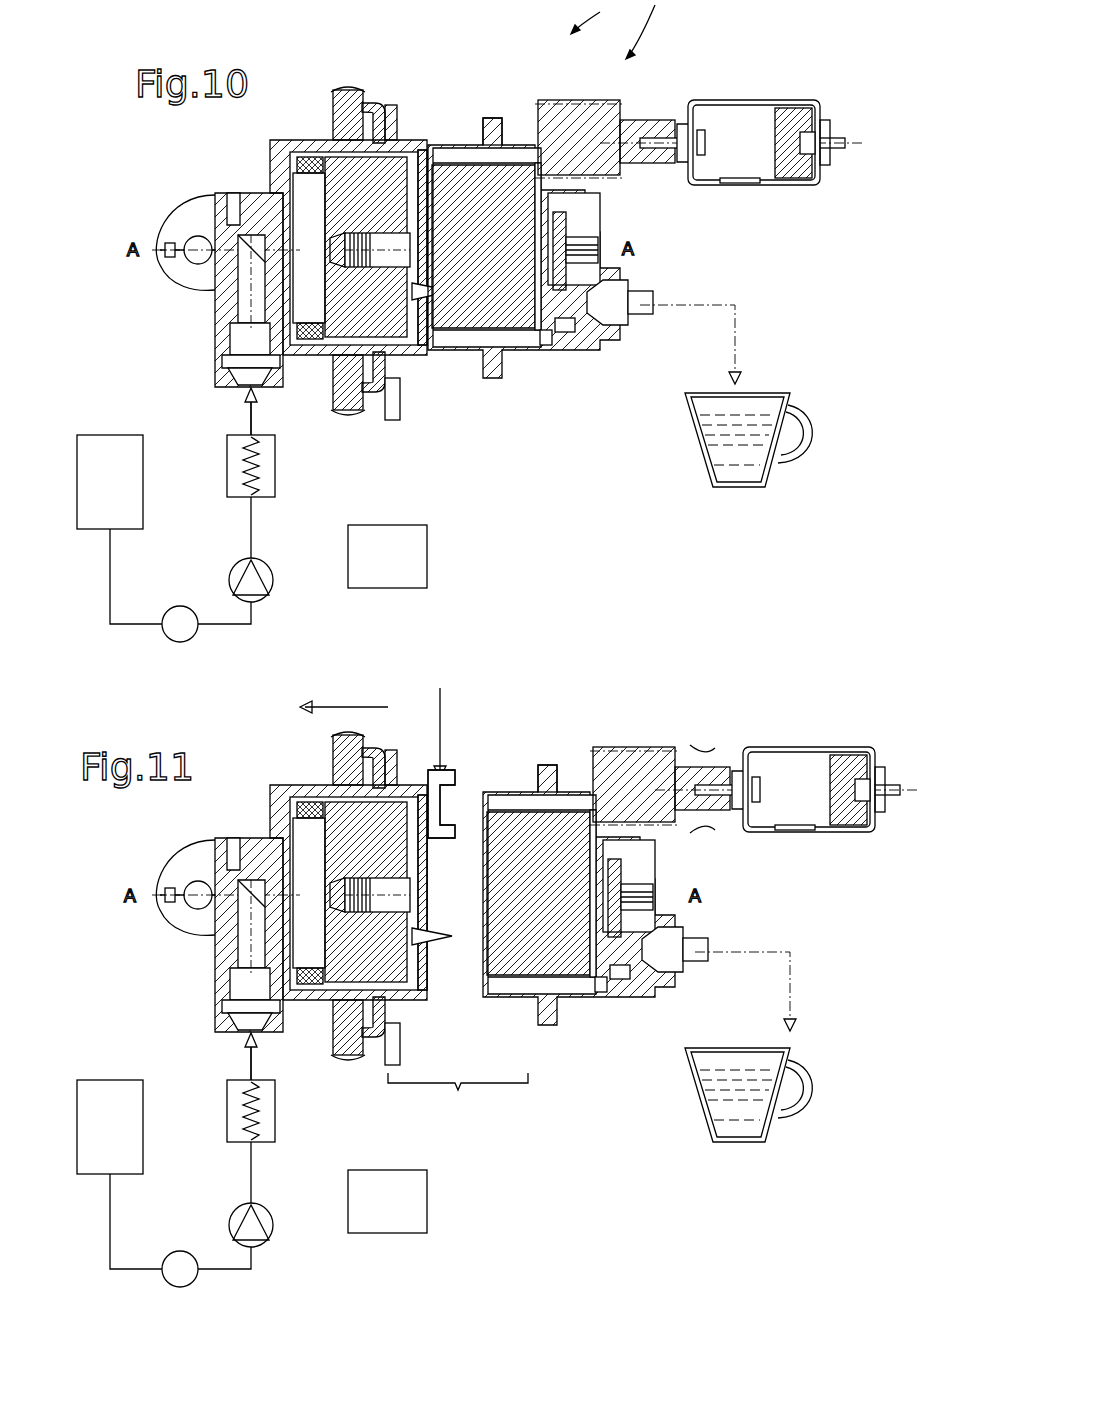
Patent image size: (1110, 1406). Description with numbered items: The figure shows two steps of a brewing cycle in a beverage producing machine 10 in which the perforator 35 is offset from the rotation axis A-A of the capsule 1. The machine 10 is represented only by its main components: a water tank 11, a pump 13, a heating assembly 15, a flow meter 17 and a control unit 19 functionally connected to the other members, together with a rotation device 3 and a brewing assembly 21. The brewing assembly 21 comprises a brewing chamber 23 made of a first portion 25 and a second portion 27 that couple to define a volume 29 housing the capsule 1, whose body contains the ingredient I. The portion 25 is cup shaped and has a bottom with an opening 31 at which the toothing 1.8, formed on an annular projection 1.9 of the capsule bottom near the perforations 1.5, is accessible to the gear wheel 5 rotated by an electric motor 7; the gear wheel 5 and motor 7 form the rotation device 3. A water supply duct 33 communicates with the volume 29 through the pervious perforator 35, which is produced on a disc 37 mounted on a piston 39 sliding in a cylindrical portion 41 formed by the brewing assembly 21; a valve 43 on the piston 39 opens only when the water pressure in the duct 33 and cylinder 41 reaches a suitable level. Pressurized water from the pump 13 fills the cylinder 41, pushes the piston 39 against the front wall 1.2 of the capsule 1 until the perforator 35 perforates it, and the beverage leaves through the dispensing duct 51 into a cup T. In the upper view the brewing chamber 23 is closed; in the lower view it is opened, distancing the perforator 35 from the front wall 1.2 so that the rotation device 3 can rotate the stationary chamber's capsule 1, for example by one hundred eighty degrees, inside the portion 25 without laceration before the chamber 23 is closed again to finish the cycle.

In FIG. 10, the capsule 1 is at (584, 237).
In FIG. 11, the capsule 1 is at (621, 899).
In FIG. 11, the front wall 1.2 is at (454, 827).
In FIG. 10, the perforations 1.5 is at (575, 235).
In FIG. 11, the perforations 1.5 is at (647, 893).
In FIG. 10, the toothing 1.8 is at (560, 350).
In FIG. 11, the toothing 1.8 is at (603, 1017).
In FIG. 10, the annular projection 1.9 is at (570, 345).
In FIG. 11, the annular projection 1.9 is at (638, 1004).
In FIG. 10, the rotation device 3 is at (700, 139).
In FIG. 11, the rotation device 3 is at (755, 786).
In FIG. 10, the gear wheel 5 is at (580, 118).
In FIG. 11, the gear wheel 5 is at (755, 752).
In FIG. 10, the electric motor 7 is at (772, 102).
In FIG. 11, the electric motor 7 is at (814, 771).
In FIG. 11, the machine 10 is at (624, 669).
In FIG. 10, the water tank 11 is at (77, 463).
In FIG. 11, the water tank 11 is at (78, 1116).
In FIG. 10, the pump 13 is at (230, 578).
In FIG. 11, the pump 13 is at (223, 1223).
In FIG. 10, the heating assembly 15 is at (227, 462).
In FIG. 11, the heating assembly 15 is at (226, 1111).
In FIG. 10, the flow meter 17 is at (175, 641).
In FIG. 11, the flow meter 17 is at (165, 1292).
In FIG. 10, the control unit 19 is at (392, 588).
In FIG. 11, the control unit 19 is at (387, 1230).
In FIG. 10, the brewing assembly 21 is at (425, 81).
In FIG. 10, the brewing chamber 23 is at (467, 373).
In FIG. 11, the brewing chamber 23 is at (561, 942).
In FIG. 10, the first portion of the brewing chamber 25 is at (480, 146).
In FIG. 11, the first portion of the brewing chamber 25 is at (543, 736).
In FIG. 10, the second portion of the brewing chamber 27 is at (410, 135).
In FIG. 11, the second portion of the brewing chamber 27 is at (348, 872).
In FIG. 10, the volume 29 is at (462, 160).
In FIG. 11, the volume 29 is at (541, 857).
In FIG. 10, the opening 31 is at (540, 150).
In FIG. 11, the opening 31 is at (575, 846).
In FIG. 10, the water supply duct 33 is at (243, 305).
In FIG. 11, the water supply duct 33 is at (226, 959).
In FIG. 10, the perforator 35 is at (430, 290).
In FIG. 11, the perforator 35 is at (439, 922).
In FIG. 10, the disc 37 is at (413, 345).
In FIG. 11, the disc 37 is at (424, 928).
In FIG. 10, the piston 39 is at (340, 308).
In FIG. 11, the piston 39 is at (353, 892).
In FIG. 10, the cylindrical portion 41 is at (300, 210).
In FIG. 11, the cylindrical portion 41 is at (263, 877).
In FIG. 10, the valve 43 is at (330, 252).
In FIG. 11, the valve 43 is at (354, 881).
In FIG. 10, the dispensing duct 51 is at (650, 300).
In FIG. 11, the dispensing duct 51 is at (719, 968).
In FIG. 10, the cup T is at (768, 395).
In FIG. 11, the cup T is at (748, 1066).